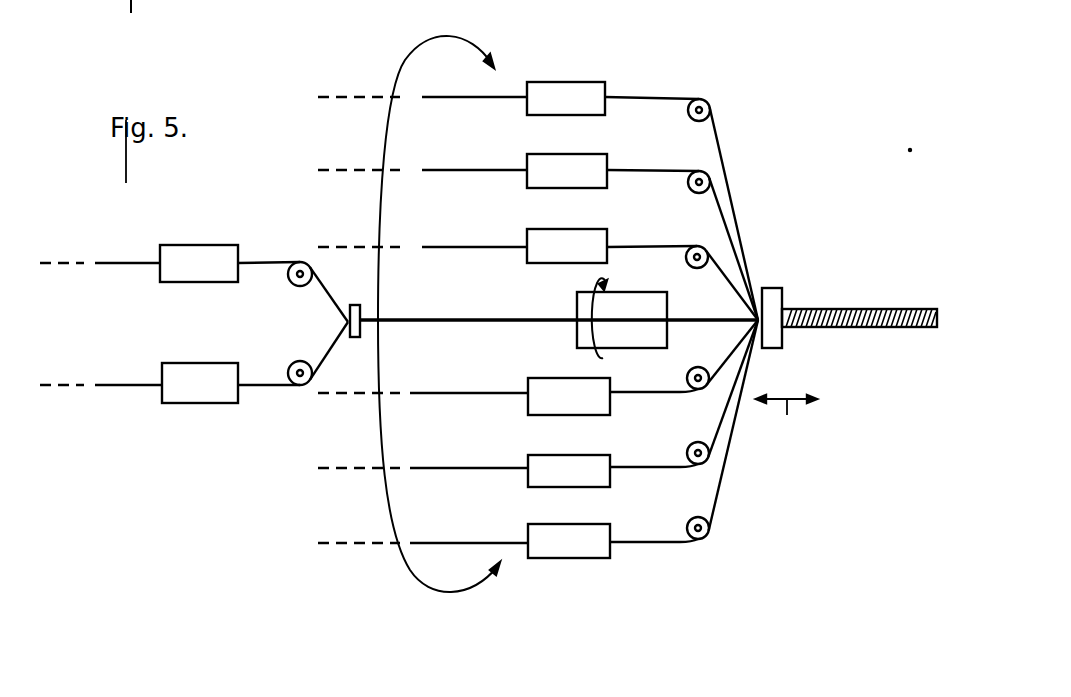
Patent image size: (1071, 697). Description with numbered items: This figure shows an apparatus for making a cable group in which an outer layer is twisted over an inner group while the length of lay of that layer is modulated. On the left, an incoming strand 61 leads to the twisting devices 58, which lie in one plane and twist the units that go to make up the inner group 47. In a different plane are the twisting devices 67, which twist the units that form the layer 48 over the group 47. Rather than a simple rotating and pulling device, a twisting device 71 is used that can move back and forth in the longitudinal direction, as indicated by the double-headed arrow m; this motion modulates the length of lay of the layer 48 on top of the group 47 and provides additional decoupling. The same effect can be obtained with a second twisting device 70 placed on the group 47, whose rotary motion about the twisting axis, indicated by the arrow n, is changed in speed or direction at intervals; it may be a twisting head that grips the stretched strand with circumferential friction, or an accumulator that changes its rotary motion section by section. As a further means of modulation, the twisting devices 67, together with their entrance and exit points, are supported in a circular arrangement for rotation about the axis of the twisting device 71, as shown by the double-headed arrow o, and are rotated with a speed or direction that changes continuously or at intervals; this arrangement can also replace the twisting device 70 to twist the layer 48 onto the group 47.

The yarn supply line 61 is at (122, 262).
The twisting devices 58 is at (216, 250).
The group 47 is at (468, 316).
The twisting devices 67 is at (598, 92).
The second twisting device 70 is at (668, 343).
The twisting device 71 is at (783, 290).
The layer 48 is at (880, 308).
The double-headed arrow O o is at (418, 45).
The rotation direction of motor n is at (572, 343).
The double-headed arrow M m is at (786, 418).